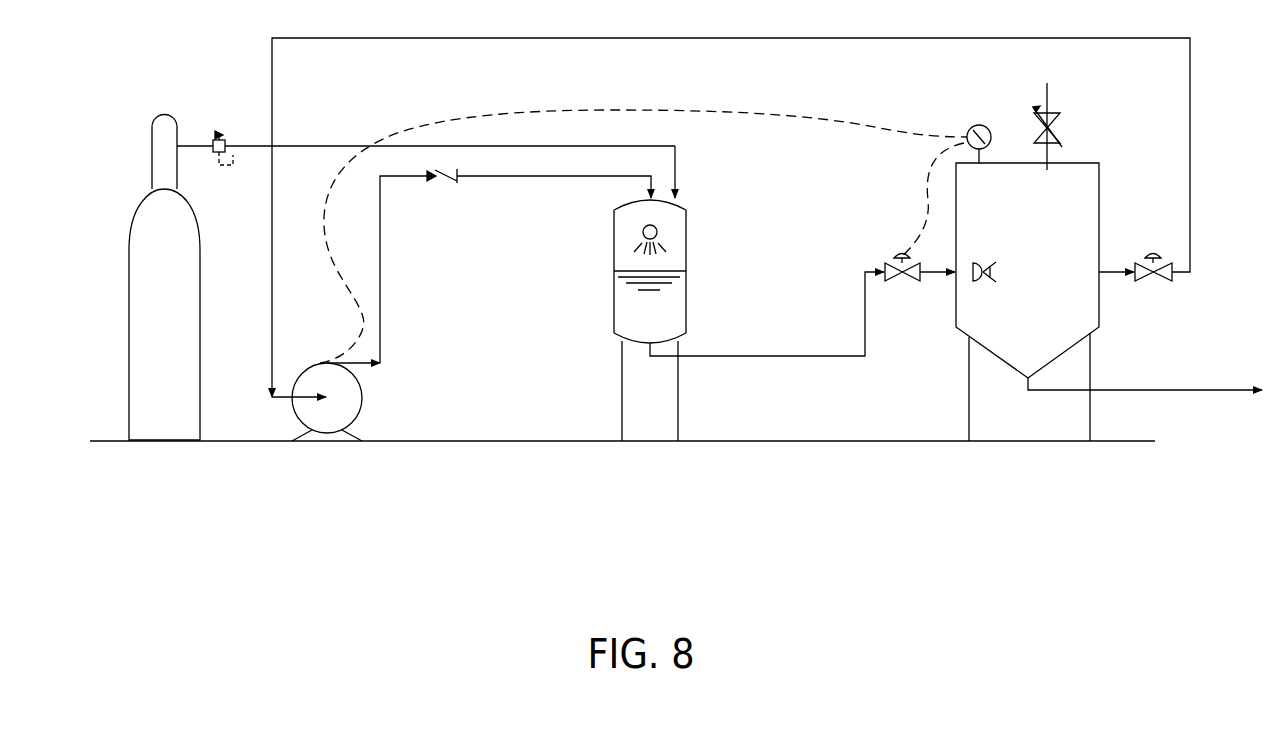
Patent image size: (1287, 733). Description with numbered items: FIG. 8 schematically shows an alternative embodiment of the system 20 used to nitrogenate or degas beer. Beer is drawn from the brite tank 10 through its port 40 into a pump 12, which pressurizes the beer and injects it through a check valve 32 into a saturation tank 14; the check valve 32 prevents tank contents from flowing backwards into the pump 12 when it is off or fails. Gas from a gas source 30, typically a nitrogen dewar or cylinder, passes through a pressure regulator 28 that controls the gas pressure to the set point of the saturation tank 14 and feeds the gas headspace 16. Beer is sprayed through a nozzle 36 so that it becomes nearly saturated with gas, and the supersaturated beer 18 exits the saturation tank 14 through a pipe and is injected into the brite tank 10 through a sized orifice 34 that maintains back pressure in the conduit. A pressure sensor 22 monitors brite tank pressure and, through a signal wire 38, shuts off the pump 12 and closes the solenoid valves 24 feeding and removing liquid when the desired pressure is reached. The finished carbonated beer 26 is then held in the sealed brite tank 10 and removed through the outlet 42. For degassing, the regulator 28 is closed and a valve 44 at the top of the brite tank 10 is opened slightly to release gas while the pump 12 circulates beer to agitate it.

The brite tank 10 is at (1106, 316).
The pump 12 is at (372, 410).
The saturation tank 14 is at (714, 315).
The gas headspace 16 is at (636, 263).
The supersaturated beer 18 is at (636, 316).
The system 20 is at (506, 462).
The pressure sensor 22 is at (989, 124).
The solenoid valves 24 is at (898, 248).
The carbonated beer 26 is at (1030, 220).
The pressure regulator 28 is at (217, 138).
The gas source 30 is at (130, 215).
The check valve 32 is at (452, 190).
The sized orifice 34 is at (971, 285).
The nozzle 36 is at (637, 228).
The signal wire 38 is at (612, 108).
The port 40 is at (1103, 267).
The outlet 42 is at (1220, 382).
The valve 44 is at (1049, 100).